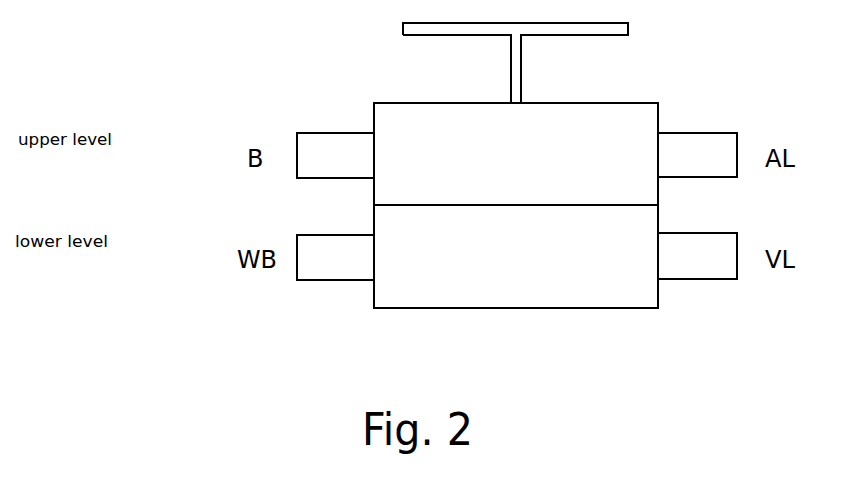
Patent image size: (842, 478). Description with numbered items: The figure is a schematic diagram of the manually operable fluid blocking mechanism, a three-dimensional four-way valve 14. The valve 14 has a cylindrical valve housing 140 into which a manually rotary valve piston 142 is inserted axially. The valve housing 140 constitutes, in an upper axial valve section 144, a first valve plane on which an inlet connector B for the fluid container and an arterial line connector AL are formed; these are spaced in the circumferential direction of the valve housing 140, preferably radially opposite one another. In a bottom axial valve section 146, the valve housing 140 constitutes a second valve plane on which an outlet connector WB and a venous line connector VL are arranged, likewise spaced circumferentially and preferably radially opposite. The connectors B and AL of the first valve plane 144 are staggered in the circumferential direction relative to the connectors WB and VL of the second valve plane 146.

The 4-way valve 14 is at (516, 177).
The valve housing 140 is at (650, 295).
The rotary valve piston 142 is at (521, 57).
The upper axial valve section 144 is at (380, 114).
The bottom axial valve section 146 is at (380, 292).